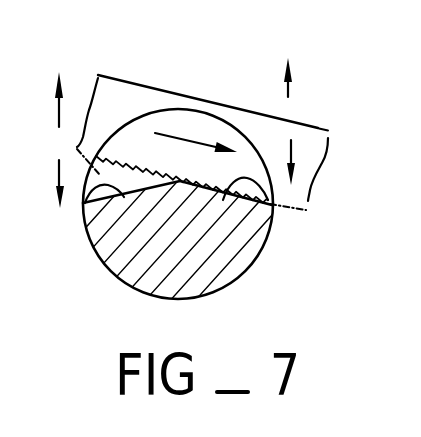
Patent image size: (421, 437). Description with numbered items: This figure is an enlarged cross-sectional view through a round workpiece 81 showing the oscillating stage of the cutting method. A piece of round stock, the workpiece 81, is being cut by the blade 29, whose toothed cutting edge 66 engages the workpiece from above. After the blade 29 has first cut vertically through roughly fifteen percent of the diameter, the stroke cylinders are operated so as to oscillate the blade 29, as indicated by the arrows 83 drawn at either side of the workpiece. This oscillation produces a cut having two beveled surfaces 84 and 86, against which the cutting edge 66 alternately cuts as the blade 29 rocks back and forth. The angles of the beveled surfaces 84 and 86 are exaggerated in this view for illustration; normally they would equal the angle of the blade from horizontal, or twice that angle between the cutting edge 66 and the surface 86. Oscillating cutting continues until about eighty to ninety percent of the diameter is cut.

The blade 29 is at (143, 100).
The workpiece 81 is at (202, 112).
The cutting edge 66 is at (95, 178).
The arrows 83 is at (62, 107).
The beveled surface 84 is at (270, 198).
The beveled surface 86 is at (85, 203).